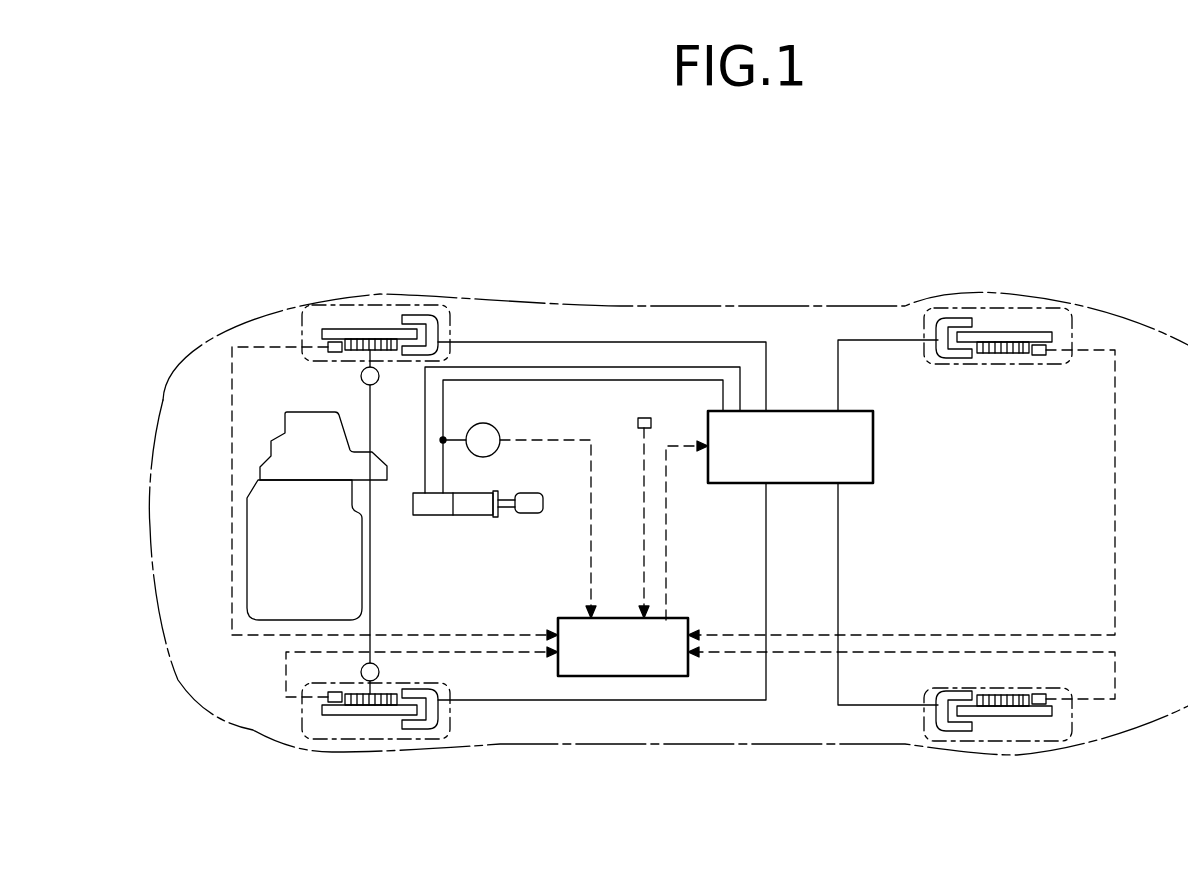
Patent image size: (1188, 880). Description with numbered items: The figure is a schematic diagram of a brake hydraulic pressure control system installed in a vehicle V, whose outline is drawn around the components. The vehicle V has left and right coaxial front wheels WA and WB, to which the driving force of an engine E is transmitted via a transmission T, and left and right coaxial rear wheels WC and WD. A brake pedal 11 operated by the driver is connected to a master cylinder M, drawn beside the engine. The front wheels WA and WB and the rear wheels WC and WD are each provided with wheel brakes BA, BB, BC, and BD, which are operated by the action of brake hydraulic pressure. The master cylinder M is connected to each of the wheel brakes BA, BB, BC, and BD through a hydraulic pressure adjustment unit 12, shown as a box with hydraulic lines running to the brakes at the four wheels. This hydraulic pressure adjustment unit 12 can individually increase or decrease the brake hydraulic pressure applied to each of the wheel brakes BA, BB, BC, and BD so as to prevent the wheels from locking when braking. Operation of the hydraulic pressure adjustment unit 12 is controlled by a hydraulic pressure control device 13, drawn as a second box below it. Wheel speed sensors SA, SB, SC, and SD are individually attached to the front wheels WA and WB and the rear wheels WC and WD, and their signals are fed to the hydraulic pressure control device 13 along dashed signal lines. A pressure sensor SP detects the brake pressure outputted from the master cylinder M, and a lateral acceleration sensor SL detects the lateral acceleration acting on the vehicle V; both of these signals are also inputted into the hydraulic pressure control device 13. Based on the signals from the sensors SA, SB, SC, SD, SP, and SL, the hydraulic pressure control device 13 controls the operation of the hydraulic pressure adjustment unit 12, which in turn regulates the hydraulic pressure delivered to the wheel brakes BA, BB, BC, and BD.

The vehicle V is at (617, 290).
The front wheel WA is at (350, 740).
The front wheel WB is at (343, 302).
The rear wheel WC is at (987, 744).
The rear wheel WD is at (987, 307).
The wheel brake BA is at (425, 736).
The wheel brake BB is at (419, 314).
The wheel brake BC is at (949, 732).
The wheel brake BD is at (938, 322).
The wheel speed sensor SA is at (328, 698).
The wheel speed sensor SB is at (328, 349).
The wheel speed sensor SC is at (1040, 706).
The wheel speed sensor SD is at (1040, 356).
The transmission T is at (321, 459).
The engine E is at (306, 571).
The master cylinder M is at (432, 502).
The brake pedal 11 is at (525, 510).
The pressure sensor SP is at (497, 435).
The lateral acceleration sensor SL is at (638, 422).
The hydraulic pressure adjustment unit 12 is at (799, 463).
The hydraulic pressure control device 13 is at (630, 662).